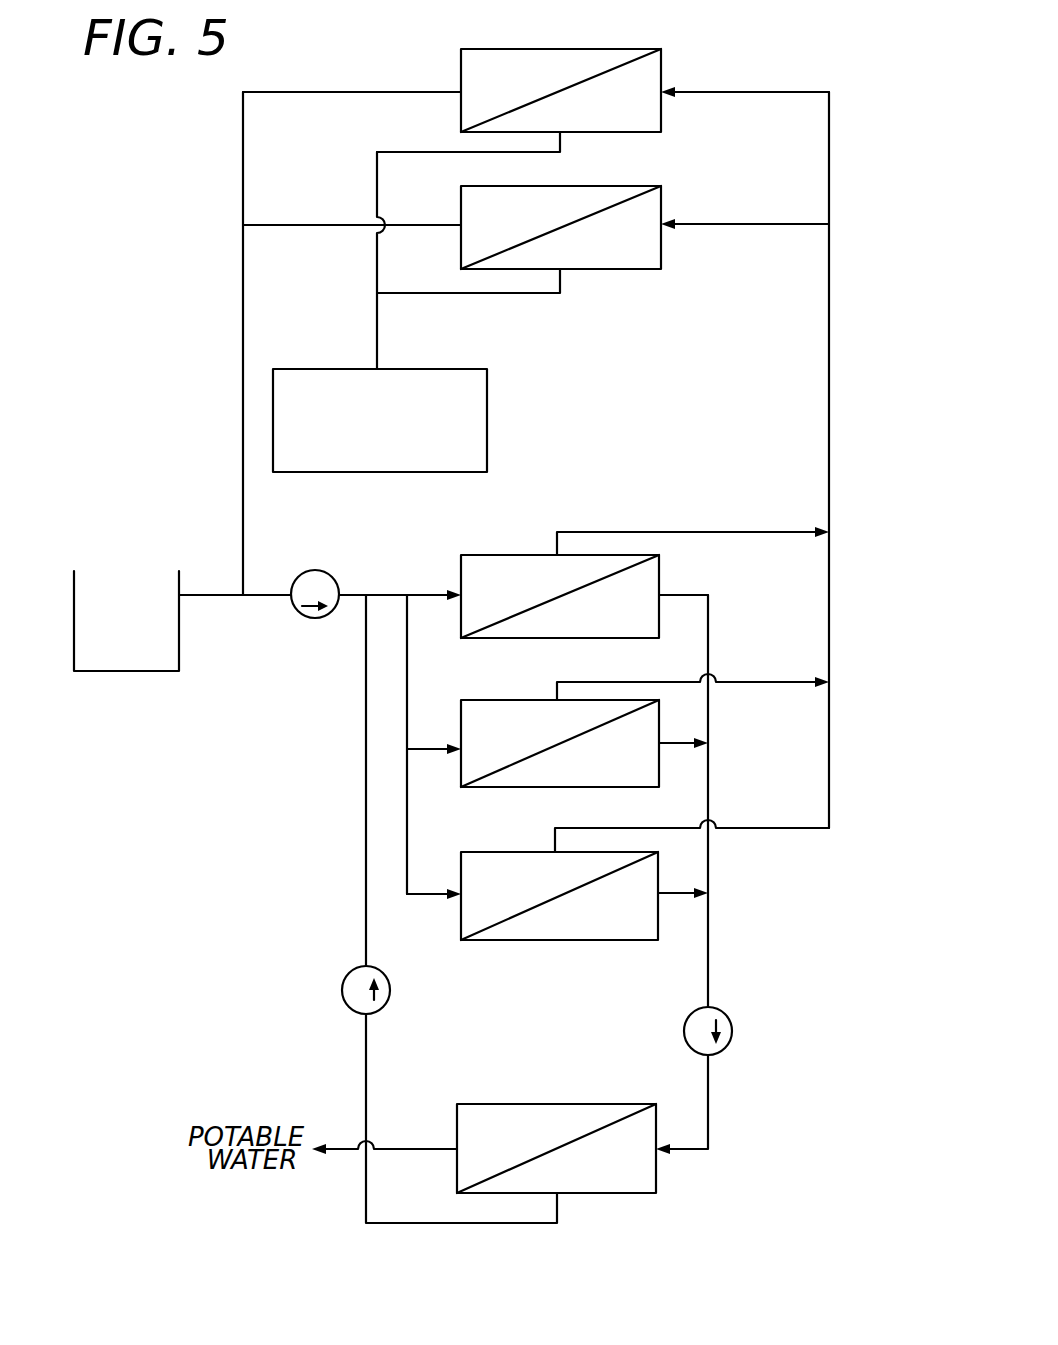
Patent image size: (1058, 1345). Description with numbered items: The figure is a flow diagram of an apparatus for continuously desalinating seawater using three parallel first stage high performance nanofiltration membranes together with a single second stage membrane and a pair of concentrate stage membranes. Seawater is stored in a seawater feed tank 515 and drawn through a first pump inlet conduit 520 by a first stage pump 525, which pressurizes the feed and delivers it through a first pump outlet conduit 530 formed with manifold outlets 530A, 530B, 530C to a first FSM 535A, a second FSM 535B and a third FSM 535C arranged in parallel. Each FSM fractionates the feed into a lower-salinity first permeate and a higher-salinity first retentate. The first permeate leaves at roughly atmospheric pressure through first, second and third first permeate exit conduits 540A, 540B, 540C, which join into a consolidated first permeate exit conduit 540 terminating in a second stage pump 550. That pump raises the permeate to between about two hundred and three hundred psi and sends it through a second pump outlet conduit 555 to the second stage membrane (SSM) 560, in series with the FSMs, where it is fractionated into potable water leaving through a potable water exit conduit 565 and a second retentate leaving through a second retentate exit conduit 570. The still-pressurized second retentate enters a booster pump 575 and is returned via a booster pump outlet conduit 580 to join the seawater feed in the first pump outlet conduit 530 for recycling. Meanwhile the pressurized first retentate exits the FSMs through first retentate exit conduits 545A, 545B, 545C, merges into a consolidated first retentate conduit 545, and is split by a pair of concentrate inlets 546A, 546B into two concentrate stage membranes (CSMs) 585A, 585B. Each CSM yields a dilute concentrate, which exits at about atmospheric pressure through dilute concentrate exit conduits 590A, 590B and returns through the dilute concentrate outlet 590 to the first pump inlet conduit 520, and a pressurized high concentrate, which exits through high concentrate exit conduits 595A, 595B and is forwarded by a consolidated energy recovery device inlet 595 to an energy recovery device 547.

The seawater feed tank 515 is at (121, 671).
The first pump inlet conduit 520 is at (208, 595).
The first stage pump 525 is at (300, 612).
The first pump outlet conduit 530 is at (360, 595).
The manifold outlet 530A is at (425, 595).
The manifold outlet 530B is at (424, 752).
The manifold outlet 530C is at (422, 897).
The first FSM 535A is at (542, 590).
The second FSM 535B is at (542, 735).
The third FSM 535C is at (559, 896).
The first first permeate exit conduit 540A is at (700, 595).
The second first permeate exit conduit 540B is at (688, 740).
The third first permeate exit conduit 540C is at (688, 890).
The consolidated first permeate exit conduit 540 is at (708, 962).
The first retentate exit conduit 545A is at (738, 532).
The first retentate exit conduit 545B is at (760, 682).
The first retentate exit conduit 545C is at (755, 828).
The consolidated first retentate conduit 545 is at (829, 408).
The concentrate inlet 546A is at (750, 92).
The concentrate inlet 546B is at (730, 224).
The energy recovery device 547 is at (487, 400).
The second stage pump 550 is at (732, 1031).
The second pump outlet conduit 555 is at (708, 1123).
The second stage high performance nanofiltration membrane (SSM) 560 is at (580, 1177).
The potable water exit conduit 565 is at (398, 1149).
The second retentate exit conduit 570 is at (418, 1223).
The booster pump 575 is at (342, 990).
The booster pump outlet conduit 580 is at (366, 850).
The concentrate stage high performance nanofiltration membrane (CSM) 585A is at (474, 85).
The concentrate stage high performance nanofiltration membrane (CSM) 585B is at (472, 222).
The dilute concentrate exit conduit 590A is at (337, 92).
The dilute concentrate exit conduit 590B is at (312, 225).
The dilute concentrate outlet 590 is at (243, 408).
The high concentrate exit conduit 595A is at (400, 152).
The high concentrate exit conduit 595B is at (460, 293).
The consolidated energy recovery device inlet 595 is at (377, 312).